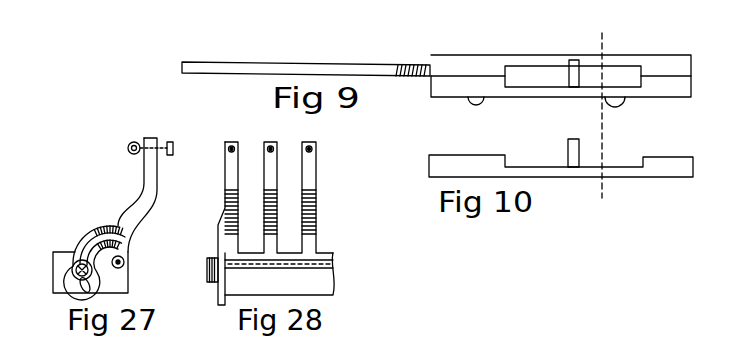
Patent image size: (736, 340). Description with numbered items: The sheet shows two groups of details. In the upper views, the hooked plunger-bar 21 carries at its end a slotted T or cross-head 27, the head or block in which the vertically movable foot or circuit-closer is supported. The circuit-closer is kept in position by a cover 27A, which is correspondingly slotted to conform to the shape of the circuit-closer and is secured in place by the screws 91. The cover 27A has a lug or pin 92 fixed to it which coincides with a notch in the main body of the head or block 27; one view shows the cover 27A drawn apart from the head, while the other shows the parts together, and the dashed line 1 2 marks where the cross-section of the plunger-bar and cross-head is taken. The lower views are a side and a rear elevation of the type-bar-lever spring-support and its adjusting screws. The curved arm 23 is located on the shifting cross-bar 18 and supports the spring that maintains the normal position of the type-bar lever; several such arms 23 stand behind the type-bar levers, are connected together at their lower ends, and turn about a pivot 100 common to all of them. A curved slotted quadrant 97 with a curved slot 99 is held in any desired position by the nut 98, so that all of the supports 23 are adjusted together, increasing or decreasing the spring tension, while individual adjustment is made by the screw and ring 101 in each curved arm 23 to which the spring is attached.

In FIG. 9, the section line 1 is at (603, 106).
In FIG. 10, the section line 2 is at (600, 210).
In FIG. 27, the shifting cross-bar 18 is at (53, 277).
In FIG. 28, the shifting cross-bar 18 is at (279, 274).
In FIG. 9, the hooked plunger-bar 21 is at (238, 62).
In FIG. 27, the curved arm 23 is at (157, 194).
In FIG. 28, the curved arm 23 is at (311, 186).
In FIG. 9, the slotted T or cross-head 27 is at (561, 71).
In FIG. 9, the cover 27A is at (561, 86).
In FIG. 10, the cover 27A is at (561, 166).
In FIG. 9, the screws 91 is at (624, 104).
In FIG. 9, the lug or pin 92 is at (570, 61).
In FIG. 10, the lug or pin 92 is at (567, 141).
In FIG. 27, the curved slotted quadrant 97 is at (78, 233).
In FIG. 28, the curved slotted quadrant 97 is at (218, 230).
In FIG. 27, the nut 98 is at (72, 281).
In FIG. 28, the nut 98 is at (207, 273).
In FIG. 27, the curved slot 99 is at (103, 226).
In FIG. 27, the pivot 100 is at (125, 262).
In FIG. 28, the pivot 100 is at (336, 261).
In FIG. 27, the screw and ring 101 is at (174, 141).
In FIG. 28, the screw and ring 101 is at (312, 149).